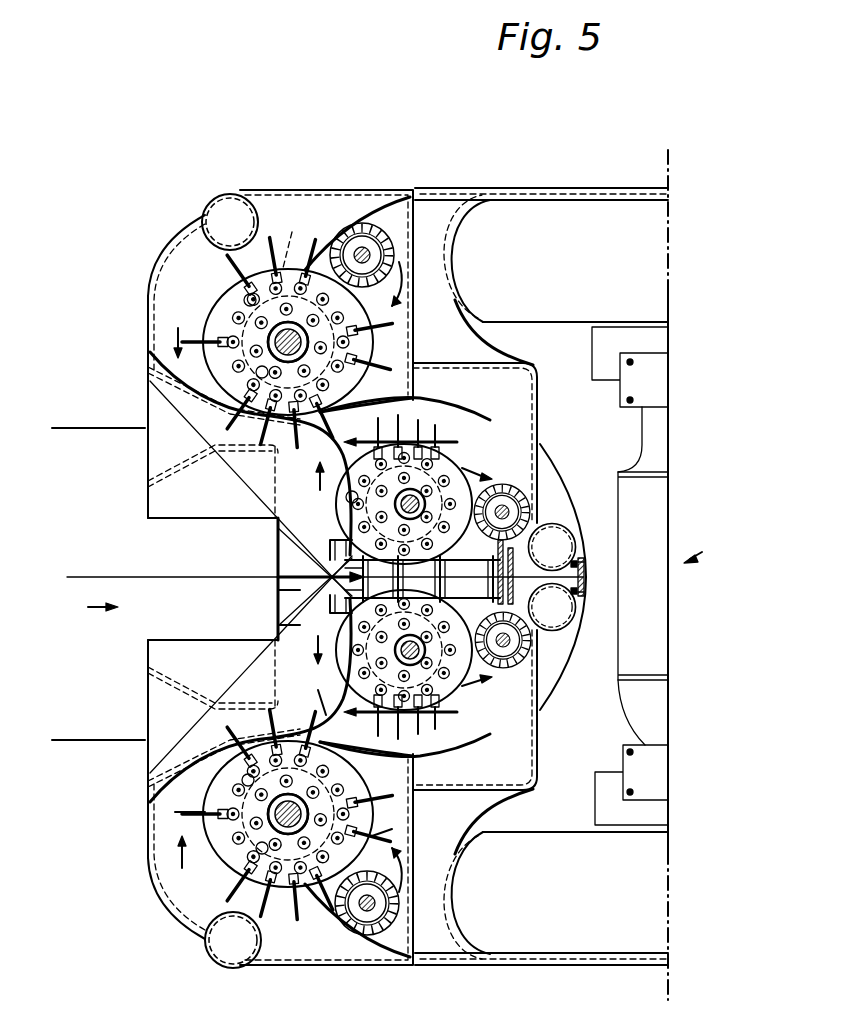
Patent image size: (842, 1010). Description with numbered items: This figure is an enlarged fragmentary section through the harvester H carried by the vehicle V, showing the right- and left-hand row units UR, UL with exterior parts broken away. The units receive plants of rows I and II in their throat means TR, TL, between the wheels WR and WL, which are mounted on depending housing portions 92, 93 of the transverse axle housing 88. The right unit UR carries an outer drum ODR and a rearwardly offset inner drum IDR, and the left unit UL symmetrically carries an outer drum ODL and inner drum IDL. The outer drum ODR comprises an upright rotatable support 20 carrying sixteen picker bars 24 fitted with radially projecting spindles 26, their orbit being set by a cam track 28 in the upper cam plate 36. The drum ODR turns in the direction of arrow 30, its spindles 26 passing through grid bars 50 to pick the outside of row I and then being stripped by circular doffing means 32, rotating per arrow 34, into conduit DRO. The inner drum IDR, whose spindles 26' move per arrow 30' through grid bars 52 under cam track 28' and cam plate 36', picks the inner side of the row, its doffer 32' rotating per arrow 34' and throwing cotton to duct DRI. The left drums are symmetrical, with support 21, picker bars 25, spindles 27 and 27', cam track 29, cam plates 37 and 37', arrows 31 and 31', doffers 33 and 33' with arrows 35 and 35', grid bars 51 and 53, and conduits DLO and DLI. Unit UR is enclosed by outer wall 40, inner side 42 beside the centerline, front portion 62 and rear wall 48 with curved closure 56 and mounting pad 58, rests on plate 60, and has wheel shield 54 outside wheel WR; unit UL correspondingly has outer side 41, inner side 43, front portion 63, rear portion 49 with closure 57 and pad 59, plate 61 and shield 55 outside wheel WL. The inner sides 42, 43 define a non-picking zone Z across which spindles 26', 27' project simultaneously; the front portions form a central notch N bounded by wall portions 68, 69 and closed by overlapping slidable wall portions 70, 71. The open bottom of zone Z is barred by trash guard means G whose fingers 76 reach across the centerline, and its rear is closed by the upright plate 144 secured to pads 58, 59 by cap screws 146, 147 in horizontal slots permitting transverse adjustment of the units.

The upright wall 40 is at (330, 190).
The outer side portion 41 is at (345, 968).
The wheel shield 54 is at (455, 190).
The shield 55 is at (448, 966).
The conduit DRO is at (203, 220).
The drive roller outer lower DLO is at (205, 955).
The spindles 26 is at (296, 238).
The spindles 26' is at (366, 480).
The spindles 27 is at (352, 761).
The spindles 27' is at (389, 680).
The circular doffing means 32 is at (368, 246).
The doffing means 33 is at (390, 893).
The rotating doffer means 32' is at (525, 494).
The doffer means 33' is at (523, 640).
The arrow 34 is at (402, 284).
The arrow 35 is at (418, 890).
The arrow 34' is at (497, 466).
The arrow 35' is at (501, 687).
The right-hand row unit UR is at (147, 285).
The left-hand row unit UL is at (148, 880).
The outer drum ODR is at (236, 300).
The outer drum ODL is at (236, 862).
The inner drum IDR is at (462, 443).
The inner drum IDL is at (465, 710).
The cam track 28 is at (261, 307).
The cam track 29 is at (267, 787).
The cam track 28' is at (334, 496).
The picker bars 24 is at (279, 341).
The upright rotatable support 21 is at (281, 814).
The upright rotatable support 20 is at (275, 371).
The picker bars 25 is at (269, 841).
The arrow 30 is at (162, 334).
The arrow 31 is at (169, 852).
The arrow 30' is at (300, 481).
The arrow 31' is at (300, 648).
The upper cam plate 36 is at (357, 282).
The cam plate 36' is at (319, 549).
The cam plate 37 is at (176, 812).
The cam plate 37' is at (318, 613).
The grid bars 50 is at (370, 400).
The grid bars 51 is at (400, 719).
The grid bars 52 is at (400, 430).
The grid bars 53 is at (406, 718).
The throat means TR is at (143, 422).
The throat means TL is at (145, 748).
The row I is at (92, 433).
The row II is at (90, 739).
The transverse horizontal plate 60 is at (522, 378).
The transverse horizontal plate structure 61 is at (538, 790).
The upright transverse front portion 62 is at (148, 345).
The front portion 63 is at (148, 828).
The right-hand wheel WR is at (668, 240).
The left-hand wheel WL is at (668, 940).
The upright transverse wall 48 is at (538, 405).
The rear portion 49 is at (538, 757).
The depending housing portion 92 is at (602, 330).
The depending housing portion 93 is at (602, 826).
The transverse axle housing 88 is at (652, 720).
The upright transversely curved closure 56 is at (558, 492).
The closure 57 is at (574, 630).
The conduit DRI is at (566, 520).
The drive roller inner lower DLI is at (566, 636).
The wall portion 68 is at (150, 518).
The wall portion 69 is at (150, 640).
The transverse wall portion 70 is at (278, 538).
The guard fingers 76 is at (421, 579).
The non-picking zone Z is at (454, 587).
The trash guard means G is at (512, 572).
The central notch N is at (325, 567).
The upright inner side portion 42 is at (278, 562).
The upright inner side portion 43 is at (278, 592).
The transverse wall portion 71 is at (278, 627).
The harvester H is at (91, 608).
The vehicle V is at (705, 549).
The rear upright mounting portion 58 is at (574, 562).
The mounting pad 59 is at (576, 594).
The elongated upright plate 144 is at (585, 578).
The cap screws 146 is at (584, 567).
The cap screws 147 is at (584, 589).